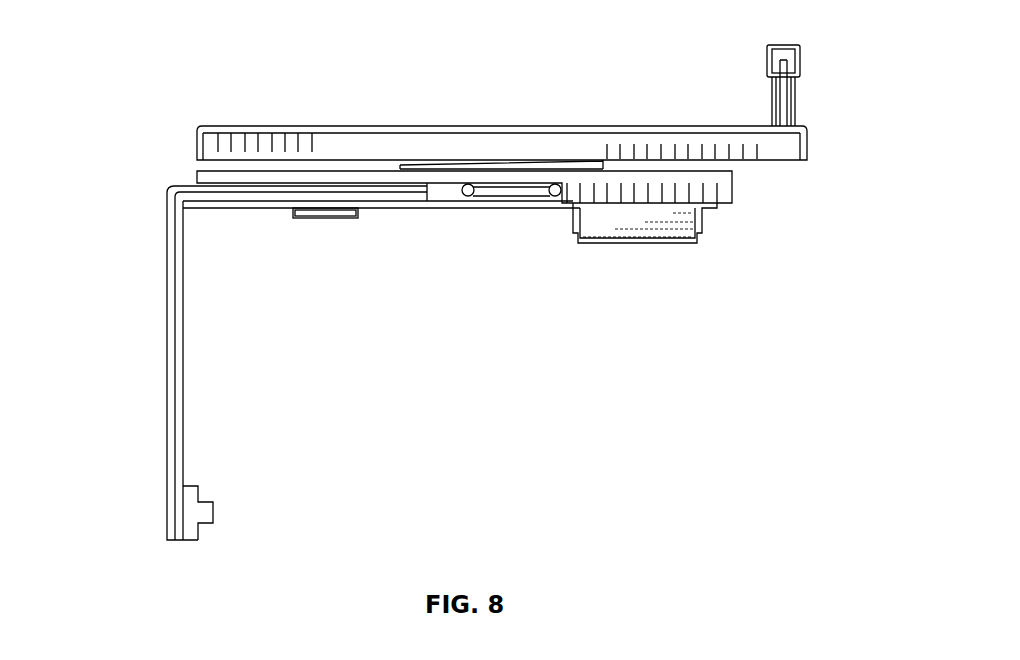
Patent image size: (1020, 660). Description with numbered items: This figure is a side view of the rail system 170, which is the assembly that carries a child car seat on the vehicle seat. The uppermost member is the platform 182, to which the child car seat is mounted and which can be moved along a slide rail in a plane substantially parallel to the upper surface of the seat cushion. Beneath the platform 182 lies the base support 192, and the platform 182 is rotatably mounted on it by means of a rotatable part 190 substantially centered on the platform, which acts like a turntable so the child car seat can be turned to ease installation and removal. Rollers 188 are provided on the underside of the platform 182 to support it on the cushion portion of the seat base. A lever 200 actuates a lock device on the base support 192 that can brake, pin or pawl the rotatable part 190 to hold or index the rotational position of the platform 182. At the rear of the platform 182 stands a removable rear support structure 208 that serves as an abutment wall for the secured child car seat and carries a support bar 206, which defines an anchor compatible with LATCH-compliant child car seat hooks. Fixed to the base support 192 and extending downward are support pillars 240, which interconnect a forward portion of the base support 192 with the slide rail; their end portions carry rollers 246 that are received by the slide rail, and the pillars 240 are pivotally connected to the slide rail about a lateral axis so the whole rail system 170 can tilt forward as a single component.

The rail system 170 is at (145, 84).
The platform 182 is at (439, 125).
The rollers 188 is at (638, 243).
The rotatable part 190 is at (533, 163).
The base support 192 is at (450, 197).
The lever 200 is at (323, 218).
The support bar 206 is at (783, 45).
The rear support structure 208 is at (797, 93).
The support pillars 240 is at (165, 450).
The rollers 246 is at (205, 514).